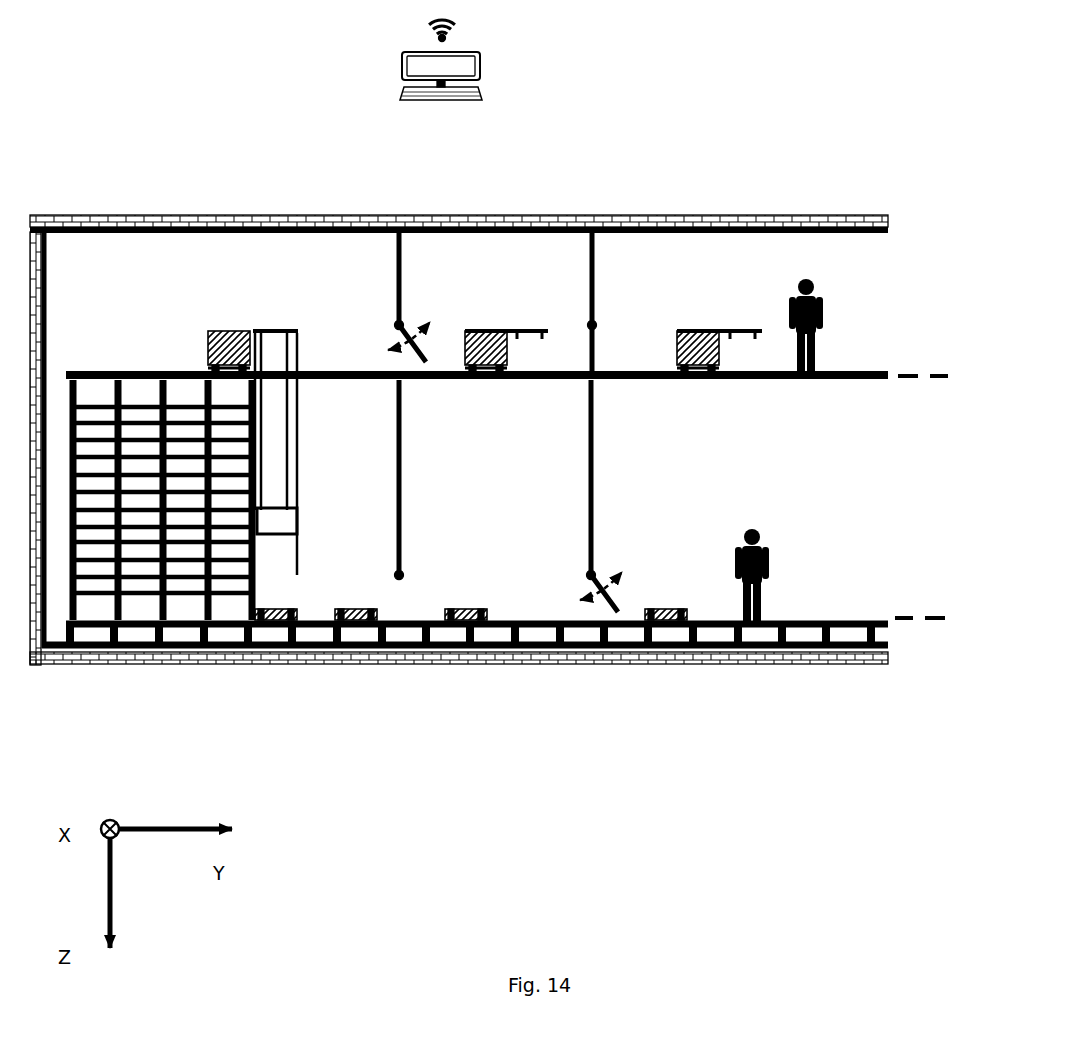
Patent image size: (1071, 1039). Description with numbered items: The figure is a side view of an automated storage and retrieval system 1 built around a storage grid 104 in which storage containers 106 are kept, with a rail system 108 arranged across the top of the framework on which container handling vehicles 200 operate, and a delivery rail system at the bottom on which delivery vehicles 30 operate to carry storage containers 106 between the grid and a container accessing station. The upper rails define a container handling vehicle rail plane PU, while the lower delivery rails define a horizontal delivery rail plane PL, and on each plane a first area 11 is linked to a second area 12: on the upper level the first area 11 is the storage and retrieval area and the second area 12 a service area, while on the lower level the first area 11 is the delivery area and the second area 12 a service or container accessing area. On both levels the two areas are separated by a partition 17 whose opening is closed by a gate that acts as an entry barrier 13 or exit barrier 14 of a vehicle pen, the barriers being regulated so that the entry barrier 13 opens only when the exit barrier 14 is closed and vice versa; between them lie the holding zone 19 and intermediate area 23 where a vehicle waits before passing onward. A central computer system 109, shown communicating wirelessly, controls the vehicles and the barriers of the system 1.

The automated storage and retrieval system 1 is at (128, 340).
The first area 11 is at (250, 252).
The second area 12 is at (800, 252).
The entry barrier 13 is at (467, 518).
The exit barrier 14 is at (440, 334).
The partition 17 is at (400, 281).
The holding zone 19 is at (583, 304).
The intermediate area 23 is at (540, 255).
The delivery vehicle 30 is at (278, 628).
The grid 104 is at (135, 597).
The storage container 106 is at (297, 519).
The rail system 108 is at (180, 372).
The central computer system 109 is at (518, 48).
The container handling vehicle 200 is at (273, 331).
The container handling vehicle rail plane PU is at (915, 373).
The delivery rail plane PL is at (912, 621).